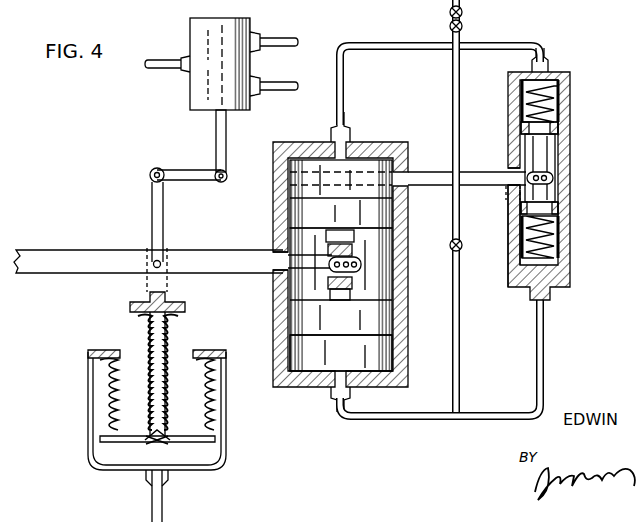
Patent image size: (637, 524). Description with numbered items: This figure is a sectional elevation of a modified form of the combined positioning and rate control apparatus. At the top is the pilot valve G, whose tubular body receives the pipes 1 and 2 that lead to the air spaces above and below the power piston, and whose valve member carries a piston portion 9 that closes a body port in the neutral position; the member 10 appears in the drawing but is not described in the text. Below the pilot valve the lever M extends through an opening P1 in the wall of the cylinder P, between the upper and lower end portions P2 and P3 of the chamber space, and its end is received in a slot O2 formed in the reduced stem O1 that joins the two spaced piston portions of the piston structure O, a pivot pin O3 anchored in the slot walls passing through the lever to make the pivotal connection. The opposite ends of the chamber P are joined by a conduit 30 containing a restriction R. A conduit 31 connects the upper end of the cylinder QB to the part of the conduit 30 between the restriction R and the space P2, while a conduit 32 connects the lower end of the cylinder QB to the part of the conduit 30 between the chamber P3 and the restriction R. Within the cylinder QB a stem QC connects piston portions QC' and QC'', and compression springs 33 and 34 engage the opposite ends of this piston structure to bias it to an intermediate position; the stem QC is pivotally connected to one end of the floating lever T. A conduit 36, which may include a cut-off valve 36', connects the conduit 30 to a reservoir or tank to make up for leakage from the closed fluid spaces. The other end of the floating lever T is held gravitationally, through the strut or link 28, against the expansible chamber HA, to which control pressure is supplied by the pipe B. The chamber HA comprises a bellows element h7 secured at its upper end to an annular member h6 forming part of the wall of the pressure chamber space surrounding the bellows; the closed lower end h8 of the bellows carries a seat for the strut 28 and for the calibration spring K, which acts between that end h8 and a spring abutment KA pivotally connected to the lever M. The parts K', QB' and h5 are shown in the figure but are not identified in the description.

The pilot valve G is at (200, 92).
The piston portion 9 is at (160, 64).
The pipe 2 is at (276, 38).
The pipe 1 is at (277, 84).
The connecting link 10 is at (218, 134).
The strut or link 28 is at (152, 200).
The pivot pin K' is at (144, 259).
The lever M is at (58, 262).
The cylinder P is at (272, 206).
The opening P1 is at (275, 246).
The upper end portion of chamber space P2 is at (358, 165).
The lower end portion of chamber space P3 is at (382, 356).
The floating lever T is at (427, 178).
The piston structure O is at (384, 313).
The stem portion O1 is at (335, 296).
The slot O2 is at (338, 232).
The pivot pin O3 is at (350, 258).
The conduit 31 is at (534, 46).
The conduit 30 is at (457, 342).
The conduit 32 is at (543, 342).
The conduit 36 is at (441, 26).
The cut-off valve 36' is at (477, 11).
The restriction R is at (462, 245).
The cylinder QB is at (518, 174).
The valve body wall QB' is at (490, 236).
The stem QC is at (564, 168).
The piston portion QC' is at (567, 129).
The piston portion QC'' is at (570, 218).
The compression spring 33 is at (560, 97).
The compression spring 34 is at (560, 256).
The spring abutment KA is at (140, 308).
The calibration spring K is at (168, 373).
The housing h5 is at (90, 410).
The annular member h6 is at (106, 356).
The bellows element h7 is at (116, 418).
The lower closed end of bellows h8 is at (154, 442).
The expansible chamber HA is at (214, 444).
The pipe B is at (163, 503).